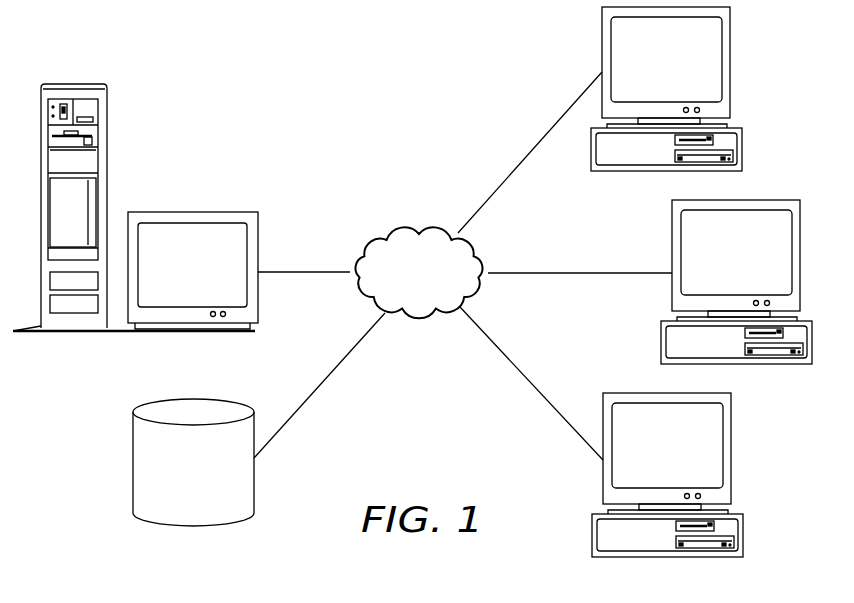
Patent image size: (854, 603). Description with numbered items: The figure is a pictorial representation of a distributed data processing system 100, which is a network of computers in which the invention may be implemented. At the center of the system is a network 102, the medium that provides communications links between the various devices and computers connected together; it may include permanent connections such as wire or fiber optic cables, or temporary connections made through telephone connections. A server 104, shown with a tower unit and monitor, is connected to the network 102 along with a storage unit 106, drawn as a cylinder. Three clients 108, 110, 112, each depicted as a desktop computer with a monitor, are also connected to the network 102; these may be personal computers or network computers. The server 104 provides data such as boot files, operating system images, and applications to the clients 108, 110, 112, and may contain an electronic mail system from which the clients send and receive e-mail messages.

The distributed data processing system 100 is at (323, 53).
The network 102 is at (404, 301).
The server 104 is at (176, 275).
The storage unit 106 is at (176, 502).
The client 108 is at (650, 72).
The client 110 is at (720, 265).
The client 112 is at (651, 457).